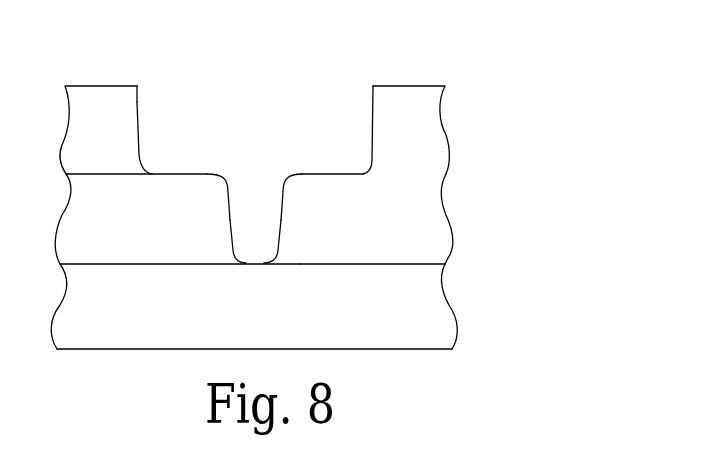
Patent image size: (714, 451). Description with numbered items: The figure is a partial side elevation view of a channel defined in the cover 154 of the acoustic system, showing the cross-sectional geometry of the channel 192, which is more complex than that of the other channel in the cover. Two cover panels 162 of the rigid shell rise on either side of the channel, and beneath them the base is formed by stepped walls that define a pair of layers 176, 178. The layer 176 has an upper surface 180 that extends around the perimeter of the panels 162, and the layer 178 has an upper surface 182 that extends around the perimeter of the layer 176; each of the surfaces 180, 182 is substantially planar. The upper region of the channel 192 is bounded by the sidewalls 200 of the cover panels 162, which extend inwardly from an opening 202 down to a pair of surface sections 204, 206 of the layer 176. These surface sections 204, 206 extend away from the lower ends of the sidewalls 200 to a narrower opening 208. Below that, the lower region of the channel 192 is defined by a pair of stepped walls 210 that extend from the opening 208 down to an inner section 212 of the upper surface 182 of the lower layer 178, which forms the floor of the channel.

The cover 154 is at (497, 198).
The cover panel 162 is at (103, 86).
The layer 176 is at (440, 240).
The layer 178 is at (441, 327).
The upper surface 180 is at (106, 174).
The upper surface 182 is at (362, 264).
The channel 192 is at (264, 84).
The sidewalls 200 is at (139, 120).
The opening 202 is at (127, 99).
The surface section 204 is at (176, 174).
The surface section 206 is at (326, 174).
The opening 208 is at (227, 177).
The stepped walls 210 is at (232, 218).
The inner section 212 is at (252, 264).